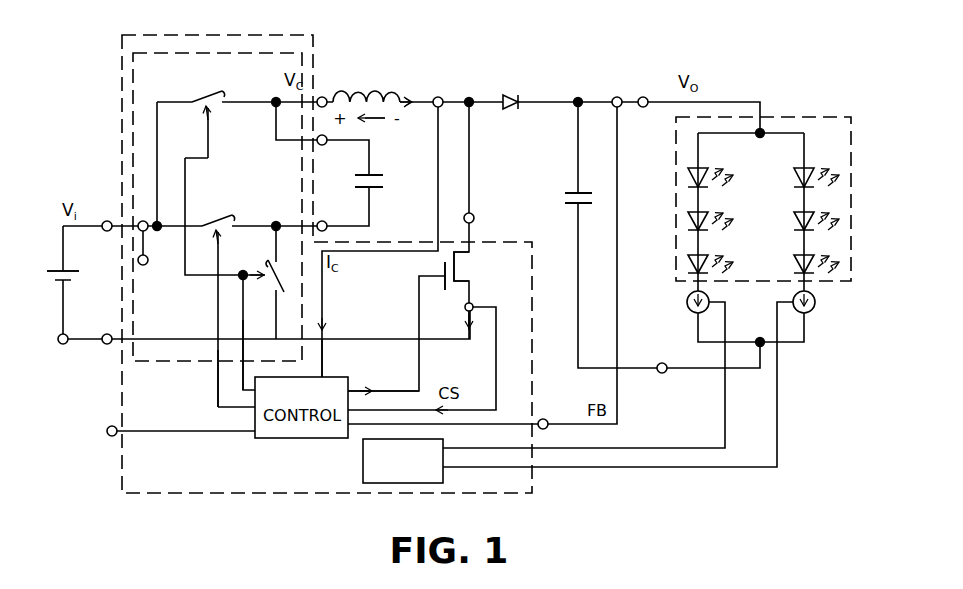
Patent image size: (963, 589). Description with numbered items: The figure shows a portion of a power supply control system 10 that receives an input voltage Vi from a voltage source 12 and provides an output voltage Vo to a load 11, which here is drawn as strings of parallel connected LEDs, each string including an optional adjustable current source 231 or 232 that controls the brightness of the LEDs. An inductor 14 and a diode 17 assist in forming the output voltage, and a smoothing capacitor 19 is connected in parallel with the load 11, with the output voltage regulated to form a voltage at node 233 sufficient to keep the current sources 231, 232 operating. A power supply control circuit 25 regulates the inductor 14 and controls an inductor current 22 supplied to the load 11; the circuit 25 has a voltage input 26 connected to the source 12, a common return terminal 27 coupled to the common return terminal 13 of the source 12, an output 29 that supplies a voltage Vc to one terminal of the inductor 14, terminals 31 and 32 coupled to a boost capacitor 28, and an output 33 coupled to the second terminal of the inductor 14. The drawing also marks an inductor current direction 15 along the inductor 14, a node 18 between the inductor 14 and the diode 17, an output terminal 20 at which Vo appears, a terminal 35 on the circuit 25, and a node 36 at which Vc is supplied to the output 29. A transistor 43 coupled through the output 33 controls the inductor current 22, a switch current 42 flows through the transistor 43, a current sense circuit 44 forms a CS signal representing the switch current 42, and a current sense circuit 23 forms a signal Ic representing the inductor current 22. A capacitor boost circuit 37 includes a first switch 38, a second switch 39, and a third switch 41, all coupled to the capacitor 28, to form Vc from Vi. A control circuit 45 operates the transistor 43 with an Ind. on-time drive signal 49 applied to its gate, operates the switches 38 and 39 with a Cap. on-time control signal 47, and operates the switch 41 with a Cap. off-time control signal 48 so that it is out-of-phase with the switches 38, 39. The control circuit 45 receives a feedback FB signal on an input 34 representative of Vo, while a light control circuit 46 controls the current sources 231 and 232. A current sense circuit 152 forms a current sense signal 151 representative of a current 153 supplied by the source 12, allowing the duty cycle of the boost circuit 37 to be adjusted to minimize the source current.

The power supply control system 10 is at (673, 515).
The load 11 is at (676, 193).
The voltage source 12 is at (57, 279).
The common return terminal 13 is at (58, 342).
The inductor 14 is at (387, 77).
The inductor current 15 is at (385, 117).
The diode 17 is at (513, 97).
The node 18 is at (472, 97).
The smoothing capacitor 19 is at (566, 206).
The output terminal 20 is at (645, 96).
The inductor current 22 is at (414, 98).
The current sense circuit 23 is at (441, 96).
The power supply control circuit 25 is at (215, 494).
The voltage input 26 is at (107, 221).
The common return terminal 27 is at (107, 334).
The boost capacitor 28 is at (385, 190).
The output 29 is at (325, 96).
The terminal 31 is at (326, 145).
The terminal 32 is at (327, 223).
The output 33 is at (474, 214).
The FB input 34 is at (546, 419).
The enable terminal 35 is at (108, 435).
The charge pump output node 36 is at (271, 98).
The capacitor boost circuit 37 is at (133, 113).
The first switch 38 is at (212, 104).
The second switch 39 is at (266, 266).
The third switch 41 is at (218, 217).
The switch current 42 is at (463, 323).
The transistor 43 is at (463, 273).
The current sense circuit 44 is at (474, 305).
The control circuit 45 is at (333, 377).
The light control circuit 46 is at (363, 447).
The Cap. on-time control signal 47 is at (241, 376).
The Cap. off-time control signal 48 is at (218, 402).
The Ind. on-time drive signal 49 is at (408, 390).
The current sense signal 151 is at (147, 265).
The current sense circuit 152 is at (143, 221).
The current 153 is at (77, 269).
The adjustable current source 231 is at (687, 303).
The adjustable current source 232 is at (812, 307).
The node 233 is at (766, 347).